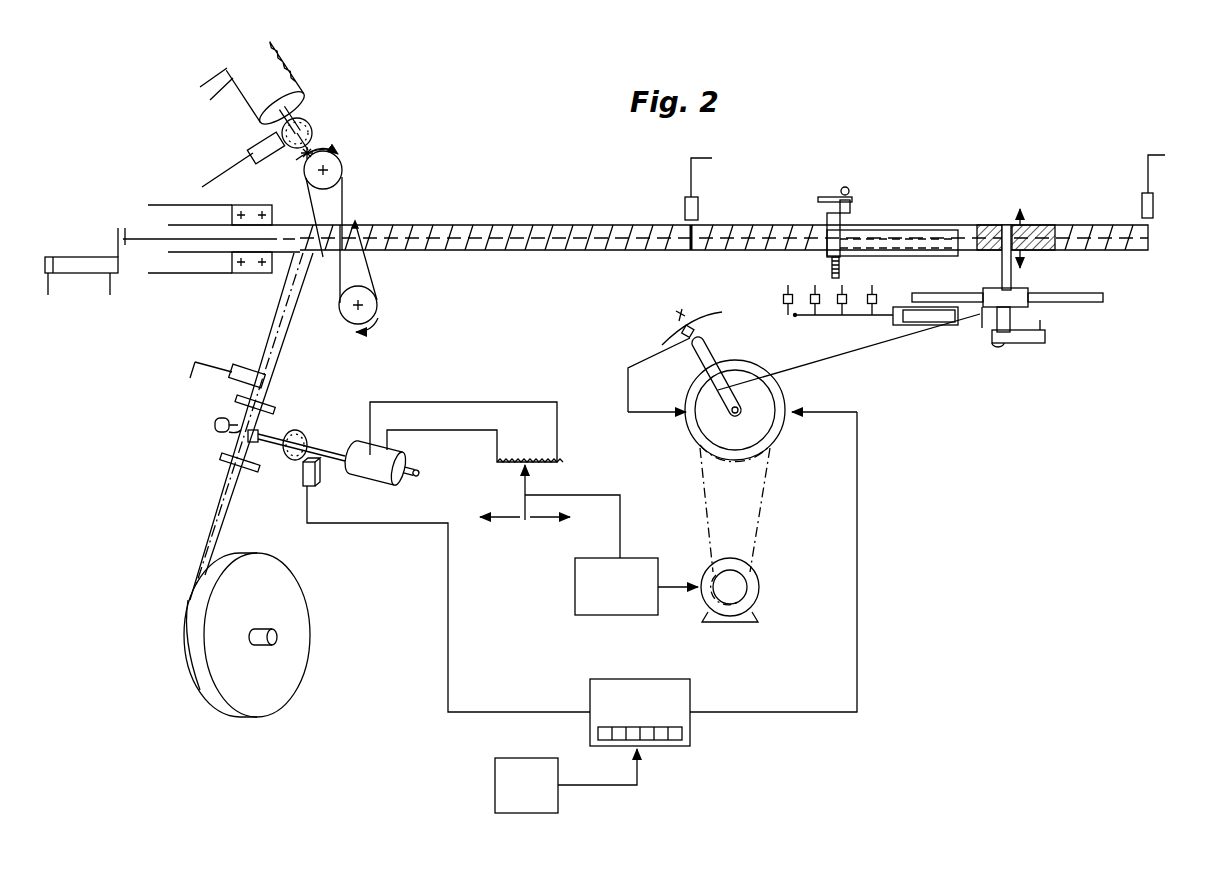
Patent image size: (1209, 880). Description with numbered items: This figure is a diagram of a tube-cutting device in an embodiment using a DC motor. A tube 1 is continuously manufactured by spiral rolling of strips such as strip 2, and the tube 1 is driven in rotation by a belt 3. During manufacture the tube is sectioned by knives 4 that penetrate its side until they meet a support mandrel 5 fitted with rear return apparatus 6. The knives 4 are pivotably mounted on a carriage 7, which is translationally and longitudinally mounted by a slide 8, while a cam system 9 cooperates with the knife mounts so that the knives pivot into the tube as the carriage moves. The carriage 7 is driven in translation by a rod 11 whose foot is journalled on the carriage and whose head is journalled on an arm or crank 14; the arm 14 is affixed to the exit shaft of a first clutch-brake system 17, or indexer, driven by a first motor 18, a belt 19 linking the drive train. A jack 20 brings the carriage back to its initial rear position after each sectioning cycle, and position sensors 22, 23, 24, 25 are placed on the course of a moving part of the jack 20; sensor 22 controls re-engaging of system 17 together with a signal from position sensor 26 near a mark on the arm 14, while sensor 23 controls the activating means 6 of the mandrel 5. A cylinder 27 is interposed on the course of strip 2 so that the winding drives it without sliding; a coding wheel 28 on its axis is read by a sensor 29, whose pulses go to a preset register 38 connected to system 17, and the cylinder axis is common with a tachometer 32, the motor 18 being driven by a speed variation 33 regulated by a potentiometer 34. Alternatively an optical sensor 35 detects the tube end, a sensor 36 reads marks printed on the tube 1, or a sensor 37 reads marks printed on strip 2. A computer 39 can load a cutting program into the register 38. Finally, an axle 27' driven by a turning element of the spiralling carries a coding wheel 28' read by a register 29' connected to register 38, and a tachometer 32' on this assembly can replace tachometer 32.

The tube 1 is at (562, 224).
The strip 2 is at (198, 528).
The belt 3 is at (343, 192).
The knives 4 is at (1022, 212).
The support mandrel 5 is at (990, 224).
The rear return apparatus 6 is at (70, 256).
The carriage 7 is at (1030, 305).
The slide 8 is at (1085, 292).
The cam system 9 is at (1030, 345).
The rod 11 is at (890, 358).
The arm or crank 14 is at (712, 348).
The first clutch-brake system 17 is at (765, 363).
The first motor 18 is at (762, 585).
The belt 19 is at (764, 492).
The jack 20 is at (925, 325).
The position sensor 22 is at (778, 291).
The position sensor 23 is at (814, 291).
The position sensor 24 is at (842, 295).
The position sensor 25 is at (876, 296).
The position sensor 26 is at (683, 333).
The cylinder 27 is at (202, 427).
The axle 27' is at (351, 140).
The coding wheel 28 is at (296, 423).
The coding wheel 28' is at (325, 124).
The sensor 29 is at (422, 585).
The register 29' is at (234, 156).
The tachometer 32 is at (382, 430).
The tachometer 32' is at (279, 93).
The speed variation 33 is at (640, 560).
The potentiometer 34 is at (521, 402).
The optical sensor 35 is at (1155, 208).
The sensor 36 is at (700, 210).
The sensor 37 is at (240, 368).
The preset register 38 is at (692, 730).
The computer 39 is at (510, 815).